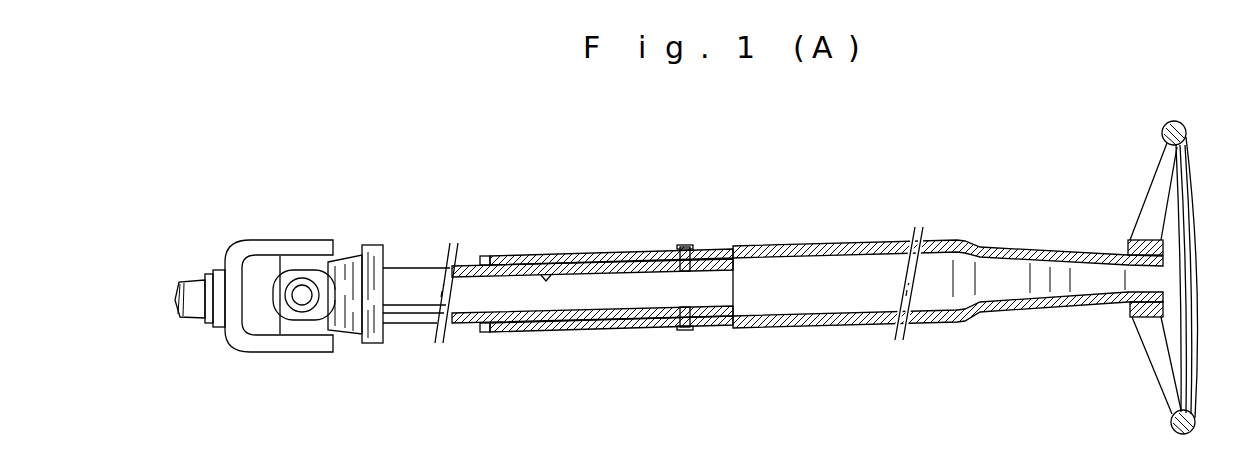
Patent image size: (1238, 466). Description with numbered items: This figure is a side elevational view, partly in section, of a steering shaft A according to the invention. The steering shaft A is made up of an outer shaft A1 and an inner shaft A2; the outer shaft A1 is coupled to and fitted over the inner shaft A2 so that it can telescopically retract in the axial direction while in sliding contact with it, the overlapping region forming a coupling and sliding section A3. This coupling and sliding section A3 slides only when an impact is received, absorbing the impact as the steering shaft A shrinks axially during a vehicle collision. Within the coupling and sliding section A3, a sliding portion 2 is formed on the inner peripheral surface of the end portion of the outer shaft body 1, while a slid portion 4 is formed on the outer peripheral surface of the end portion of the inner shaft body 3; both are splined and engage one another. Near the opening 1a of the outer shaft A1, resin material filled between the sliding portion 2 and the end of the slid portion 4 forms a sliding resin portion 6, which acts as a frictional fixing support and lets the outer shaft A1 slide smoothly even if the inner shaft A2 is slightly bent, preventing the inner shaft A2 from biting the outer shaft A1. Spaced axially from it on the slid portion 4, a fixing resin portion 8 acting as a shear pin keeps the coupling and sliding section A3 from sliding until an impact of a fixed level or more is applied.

The outer shaft body 1 is at (860, 242).
The opening 1a is at (468, 262).
The sliding portion 2 is at (552, 255).
The inner shaft body 3 is at (470, 324).
The slid portion 4 is at (628, 328).
The sliding resin portion 6 is at (497, 255).
The fixing resin portion 8 is at (683, 246).
The steering shaft A is at (825, 242).
The outer shaft A1 is at (788, 242).
The inner shaft A2 is at (458, 323).
The coupling and sliding section A3 is at (597, 248).